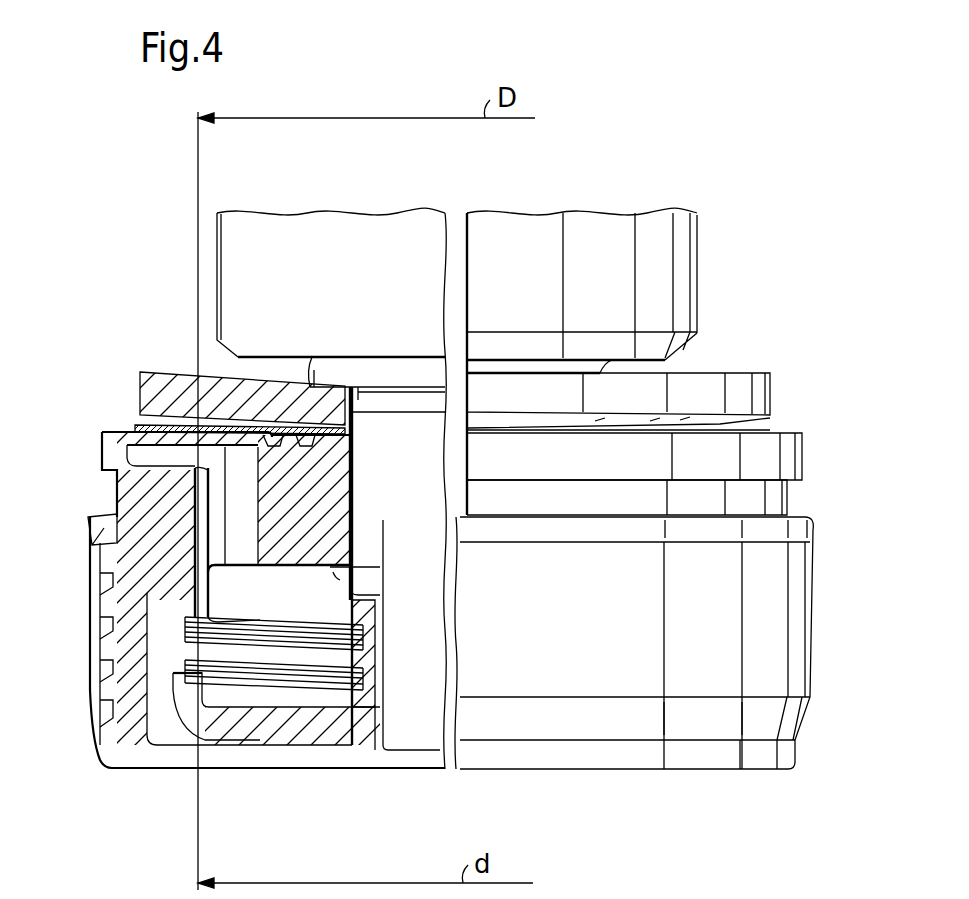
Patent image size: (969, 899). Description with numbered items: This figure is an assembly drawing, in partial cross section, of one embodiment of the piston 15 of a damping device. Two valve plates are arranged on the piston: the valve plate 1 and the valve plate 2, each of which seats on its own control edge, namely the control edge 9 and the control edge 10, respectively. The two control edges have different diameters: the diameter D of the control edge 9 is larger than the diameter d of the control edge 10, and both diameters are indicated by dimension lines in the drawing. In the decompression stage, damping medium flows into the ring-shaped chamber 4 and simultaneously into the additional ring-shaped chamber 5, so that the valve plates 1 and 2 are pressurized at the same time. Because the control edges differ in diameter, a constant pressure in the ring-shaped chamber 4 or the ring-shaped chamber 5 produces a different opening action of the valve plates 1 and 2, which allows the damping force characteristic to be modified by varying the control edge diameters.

The valve plate 1 is at (247, 613).
The valve plate 2 is at (205, 690).
The ring-shaped chamber 4 is at (257, 588).
The ring-shaped chamber 5 is at (280, 700).
The control edge 9 is at (190, 617).
The control edge 10 is at (175, 692).
The piston 15 is at (142, 502).